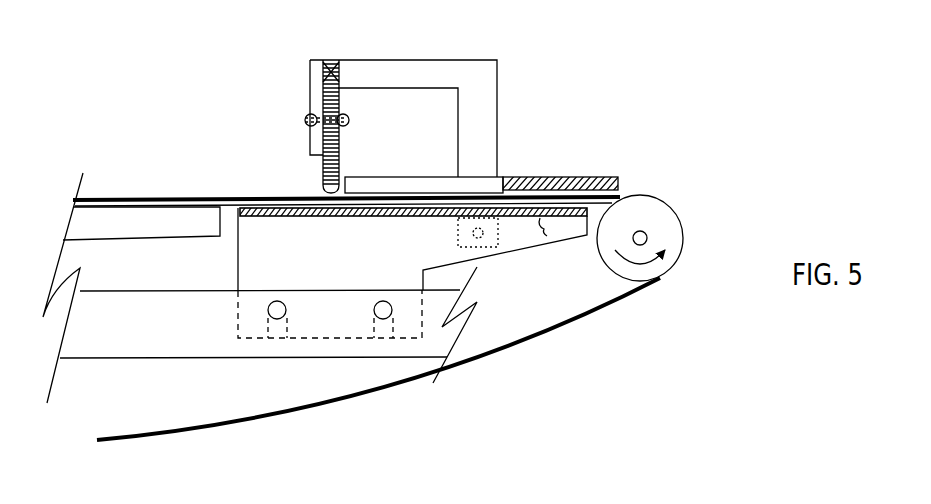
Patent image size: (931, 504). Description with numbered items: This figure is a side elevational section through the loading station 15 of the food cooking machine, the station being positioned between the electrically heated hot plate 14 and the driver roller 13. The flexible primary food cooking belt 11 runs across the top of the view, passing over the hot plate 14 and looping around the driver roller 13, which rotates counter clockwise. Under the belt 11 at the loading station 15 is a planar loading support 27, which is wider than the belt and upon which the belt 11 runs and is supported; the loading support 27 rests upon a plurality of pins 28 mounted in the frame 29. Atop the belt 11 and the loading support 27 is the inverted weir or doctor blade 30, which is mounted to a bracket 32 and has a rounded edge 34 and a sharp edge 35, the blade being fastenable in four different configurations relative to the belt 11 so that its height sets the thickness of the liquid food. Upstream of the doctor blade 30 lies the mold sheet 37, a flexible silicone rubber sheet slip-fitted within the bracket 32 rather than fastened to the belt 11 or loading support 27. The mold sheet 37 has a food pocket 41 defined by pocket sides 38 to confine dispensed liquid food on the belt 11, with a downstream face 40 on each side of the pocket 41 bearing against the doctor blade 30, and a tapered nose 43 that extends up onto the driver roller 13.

The primary food cooking belt 11 is at (177, 202).
The driver roller 13 is at (675, 223).
The electrically heated hot plate 14 is at (130, 217).
The loading station 15 is at (683, 106).
The planar loading support 27 is at (549, 237).
The pins 28 is at (383, 304).
The frame 29 is at (155, 332).
The doctor blade 30 is at (343, 160).
The bracket 32 is at (310, 87).
The rounded edge 34 is at (320, 192).
The sharp edge 35 is at (331, 75).
The mold sheet 37 is at (577, 173).
The pocket sides 38 is at (477, 185).
The downstream face 40 is at (347, 185).
The food pocket 41 is at (425, 177).
The tapered nose 43 is at (620, 186).